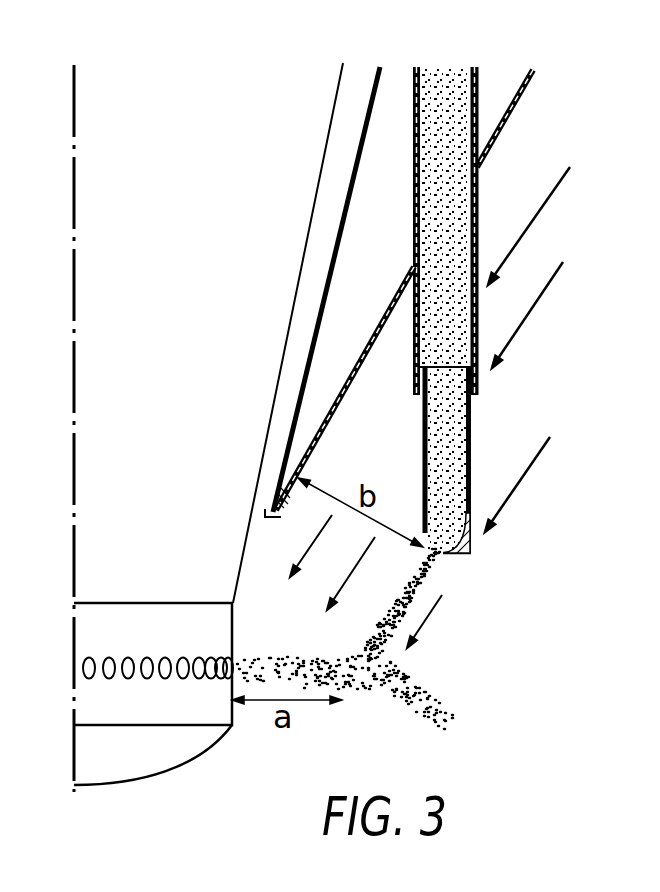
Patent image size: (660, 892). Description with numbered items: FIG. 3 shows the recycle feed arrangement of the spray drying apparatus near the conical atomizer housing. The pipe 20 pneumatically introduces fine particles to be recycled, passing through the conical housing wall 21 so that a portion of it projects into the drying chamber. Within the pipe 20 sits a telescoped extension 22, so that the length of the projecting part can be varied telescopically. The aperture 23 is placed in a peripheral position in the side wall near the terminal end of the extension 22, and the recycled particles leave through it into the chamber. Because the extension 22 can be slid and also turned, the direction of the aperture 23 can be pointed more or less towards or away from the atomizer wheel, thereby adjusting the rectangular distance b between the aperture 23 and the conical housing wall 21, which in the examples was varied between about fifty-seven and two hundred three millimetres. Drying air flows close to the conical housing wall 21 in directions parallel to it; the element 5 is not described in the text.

The perforated distributor / sparger box 5 is at (148, 603).
The pipe 20 is at (478, 189).
The conical housing wall 21 is at (340, 393).
The extension 22 is at (472, 430).
The aperture 23 is at (440, 553).